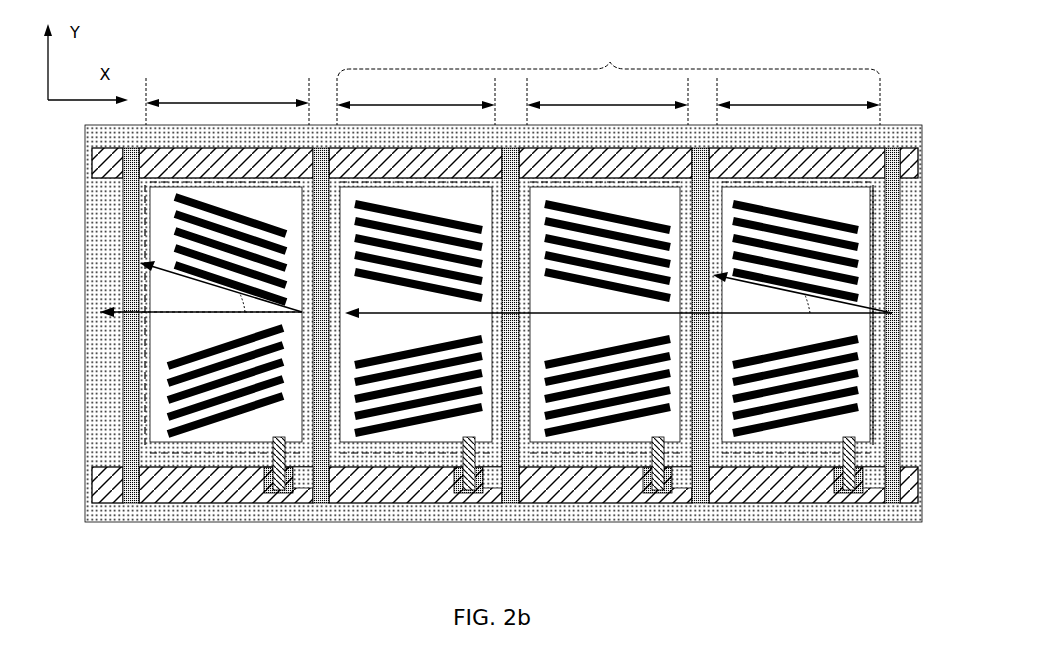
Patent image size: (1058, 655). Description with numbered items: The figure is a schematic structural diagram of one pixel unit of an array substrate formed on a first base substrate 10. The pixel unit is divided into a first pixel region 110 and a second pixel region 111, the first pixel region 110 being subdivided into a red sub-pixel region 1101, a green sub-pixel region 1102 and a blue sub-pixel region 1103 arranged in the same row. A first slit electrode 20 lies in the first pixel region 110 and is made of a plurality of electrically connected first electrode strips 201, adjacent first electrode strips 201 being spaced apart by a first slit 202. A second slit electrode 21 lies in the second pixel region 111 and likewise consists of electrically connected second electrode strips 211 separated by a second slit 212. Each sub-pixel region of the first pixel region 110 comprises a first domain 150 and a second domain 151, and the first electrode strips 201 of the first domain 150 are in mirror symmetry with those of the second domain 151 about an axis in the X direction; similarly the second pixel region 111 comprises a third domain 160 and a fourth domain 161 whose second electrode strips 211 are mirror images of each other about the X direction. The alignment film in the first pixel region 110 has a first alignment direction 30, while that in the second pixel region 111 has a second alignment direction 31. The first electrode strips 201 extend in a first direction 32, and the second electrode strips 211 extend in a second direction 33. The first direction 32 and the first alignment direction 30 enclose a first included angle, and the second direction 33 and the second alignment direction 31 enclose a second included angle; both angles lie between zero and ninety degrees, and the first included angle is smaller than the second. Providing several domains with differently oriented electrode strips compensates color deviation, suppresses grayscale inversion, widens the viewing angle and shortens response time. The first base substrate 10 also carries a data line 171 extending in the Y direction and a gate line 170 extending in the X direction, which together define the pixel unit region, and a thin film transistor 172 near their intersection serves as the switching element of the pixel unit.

The first base substrate 10 is at (903, 127).
The first pixel region 110 is at (609, 59).
The second pixel region 111 is at (227, 101).
The red sub-pixel region 1101 is at (416, 101).
The green sub-pixel region 1102 is at (607, 101).
The blue sub-pixel region 1103 is at (798, 101).
The first slit electrode 20 is at (580, 435).
The first electrode strip 201 is at (361, 503).
The first slit 202 is at (418, 425).
The second slit electrode 21 is at (257, 430).
The second electrode strip 211 is at (180, 388).
The second slit 212 is at (182, 435).
The first alignment direction 30 is at (907, 360).
The second alignment direction 31 is at (140, 325).
The first direction 32 is at (862, 300).
The second direction 33 is at (145, 287).
The first domain 150 is at (893, 198).
The second domain 151 is at (898, 412).
The third domain 160 is at (143, 220).
The fourth domain 161 is at (135, 448).
The gate line 170 is at (745, 500).
The data line 171 is at (907, 505).
The thin film transistor 172 is at (850, 497).